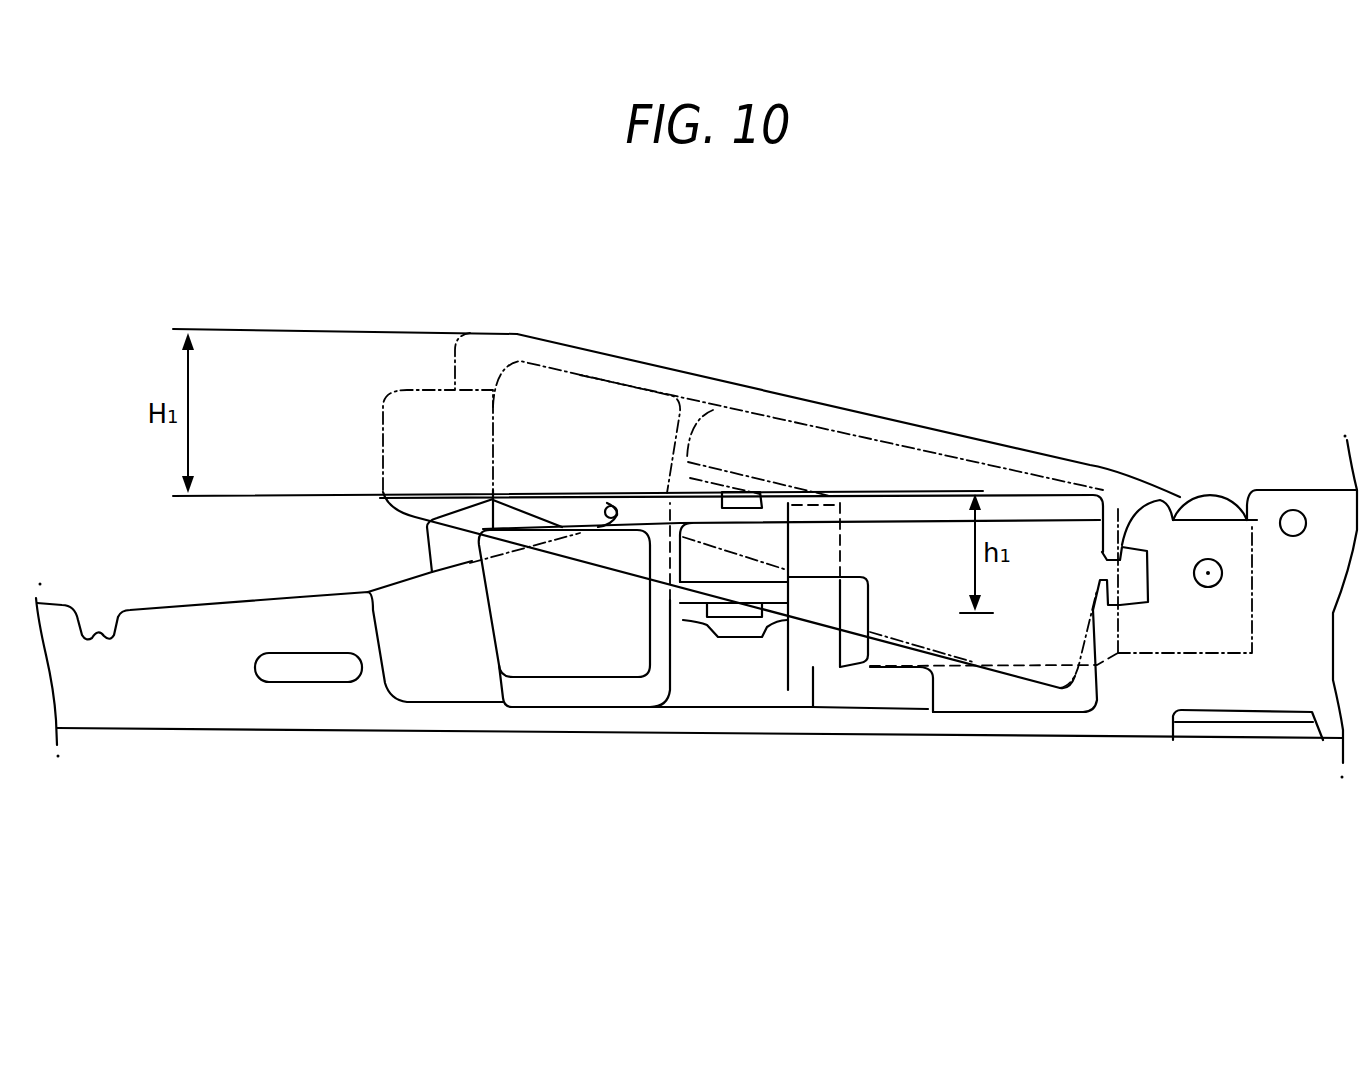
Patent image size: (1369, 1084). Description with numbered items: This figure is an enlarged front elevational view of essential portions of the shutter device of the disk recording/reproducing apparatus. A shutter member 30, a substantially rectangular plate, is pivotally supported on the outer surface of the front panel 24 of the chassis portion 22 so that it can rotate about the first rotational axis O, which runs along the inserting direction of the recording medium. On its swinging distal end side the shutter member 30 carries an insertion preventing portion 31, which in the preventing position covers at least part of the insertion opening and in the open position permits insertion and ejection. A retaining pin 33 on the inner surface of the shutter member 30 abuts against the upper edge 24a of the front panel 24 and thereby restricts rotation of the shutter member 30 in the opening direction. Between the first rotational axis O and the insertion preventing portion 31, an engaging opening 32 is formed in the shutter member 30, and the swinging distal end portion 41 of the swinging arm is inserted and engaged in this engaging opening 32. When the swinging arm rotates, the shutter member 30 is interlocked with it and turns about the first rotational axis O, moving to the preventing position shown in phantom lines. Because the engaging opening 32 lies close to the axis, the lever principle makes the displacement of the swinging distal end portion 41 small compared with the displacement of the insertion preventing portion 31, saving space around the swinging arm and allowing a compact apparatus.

The chassis portion 22 is at (1092, 750).
The front panel 24 is at (192, 705).
The upper edge 24a is at (323, 594).
The shutter member 30 is at (650, 358).
The insertion preventing portion 31 is at (478, 354).
The engaging opening 32 is at (713, 465).
The retaining pin 33 is at (607, 504).
The swinging distal end portion 41 is at (782, 452).
The first rotational axis O is at (1208, 572).